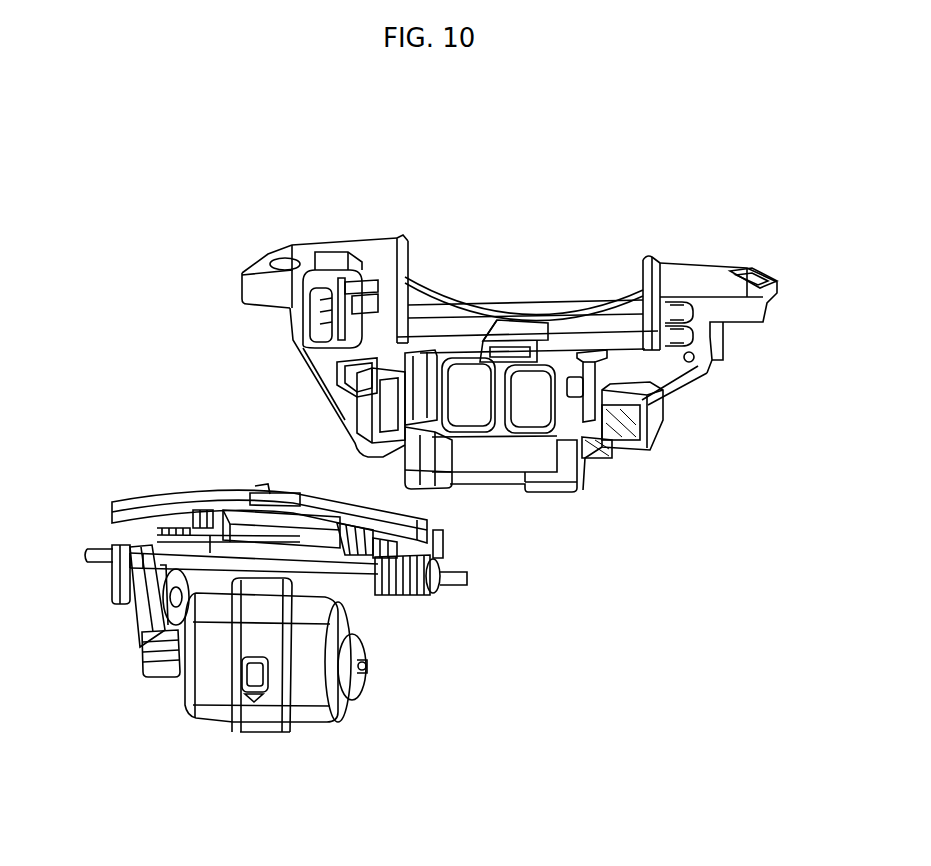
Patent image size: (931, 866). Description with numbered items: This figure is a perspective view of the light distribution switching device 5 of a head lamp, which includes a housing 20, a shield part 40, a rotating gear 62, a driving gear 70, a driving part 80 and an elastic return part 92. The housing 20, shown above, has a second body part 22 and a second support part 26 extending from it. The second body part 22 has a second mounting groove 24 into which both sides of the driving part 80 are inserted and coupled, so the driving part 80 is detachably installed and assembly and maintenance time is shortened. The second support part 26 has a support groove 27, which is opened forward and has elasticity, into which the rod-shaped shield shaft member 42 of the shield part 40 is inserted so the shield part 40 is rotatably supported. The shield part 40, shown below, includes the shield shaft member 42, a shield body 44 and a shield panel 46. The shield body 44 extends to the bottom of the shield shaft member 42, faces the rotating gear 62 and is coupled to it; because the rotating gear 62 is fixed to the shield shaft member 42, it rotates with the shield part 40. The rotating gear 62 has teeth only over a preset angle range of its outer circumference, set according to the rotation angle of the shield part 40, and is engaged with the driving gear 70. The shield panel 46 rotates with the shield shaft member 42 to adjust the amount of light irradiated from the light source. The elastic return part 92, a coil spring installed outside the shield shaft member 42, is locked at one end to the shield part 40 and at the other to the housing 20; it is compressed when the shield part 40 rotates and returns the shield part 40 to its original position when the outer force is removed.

The light distribution switching device 5 is at (496, 178).
The housing 20 is at (702, 224).
The second body part 22 is at (603, 484).
The second mounting groove 24 is at (430, 457).
The second support part 26 is at (741, 343).
The support groove 27 is at (687, 362).
The shield part 40 is at (199, 460).
The shield shaft member 42 is at (346, 571).
The shield body 44 is at (112, 582).
The shield panel 46 is at (160, 490).
The rotating gear 62 is at (150, 611).
The driving gear 70 is at (155, 675).
The driving part 80 is at (305, 702).
The elastic return part 92 is at (424, 598).